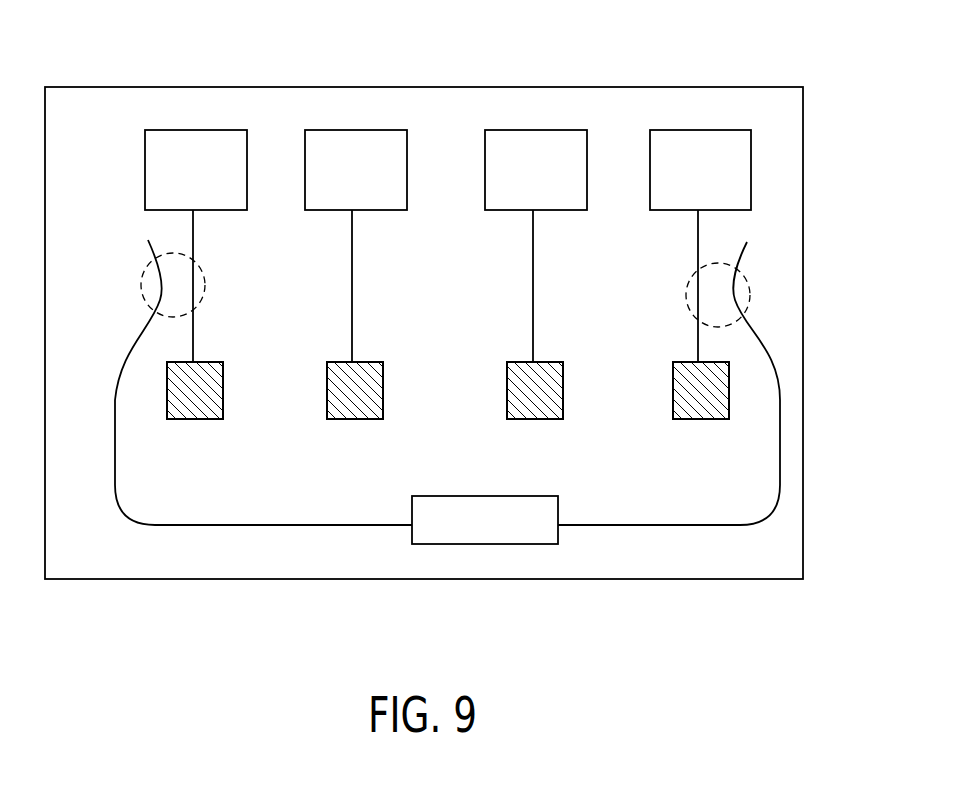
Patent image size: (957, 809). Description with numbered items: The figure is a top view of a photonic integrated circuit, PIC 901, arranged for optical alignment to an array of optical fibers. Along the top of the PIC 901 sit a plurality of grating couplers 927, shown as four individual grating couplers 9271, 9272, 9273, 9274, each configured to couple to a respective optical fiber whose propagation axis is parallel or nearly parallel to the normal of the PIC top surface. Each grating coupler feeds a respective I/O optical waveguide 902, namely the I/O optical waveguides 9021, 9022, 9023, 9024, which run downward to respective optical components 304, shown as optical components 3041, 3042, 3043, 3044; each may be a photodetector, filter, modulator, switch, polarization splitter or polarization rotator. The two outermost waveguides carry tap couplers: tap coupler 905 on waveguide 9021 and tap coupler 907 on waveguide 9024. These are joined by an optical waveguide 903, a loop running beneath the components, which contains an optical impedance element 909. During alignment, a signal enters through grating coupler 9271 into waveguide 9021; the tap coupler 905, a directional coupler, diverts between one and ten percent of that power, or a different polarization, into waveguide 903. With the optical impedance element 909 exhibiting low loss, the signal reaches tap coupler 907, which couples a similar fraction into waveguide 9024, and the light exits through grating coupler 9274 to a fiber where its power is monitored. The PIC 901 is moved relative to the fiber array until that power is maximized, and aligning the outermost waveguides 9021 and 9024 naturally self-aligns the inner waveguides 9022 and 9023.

The PIC 901 is at (803, 522).
The optical waveguide 903 is at (212, 525).
The tap coupler 905 is at (140, 283).
The tap coupler 907 is at (750, 300).
The optical impedance element 909 is at (512, 530).
The grating couplers 927 is at (444, 125).
The grating coupler 9271 is at (173, 130).
The grating coupler 9272 is at (358, 130).
The grating coupler 9273 is at (532, 130).
The grating coupler 9274 is at (710, 130).
The I/O optical waveguides 902 is at (445, 286).
The I/O optical waveguide 9021 is at (193, 318).
The I/O optical waveguide 9022 is at (352, 295).
The I/O optical waveguide 9023 is at (533, 297).
The I/O optical waveguide 9024 is at (698, 260).
The optical components 304 is at (445, 424).
The optical component 3041 is at (193, 419).
The optical component 3042 is at (355, 419).
The optical component 3043 is at (535, 419).
The optical component 3044 is at (708, 419).